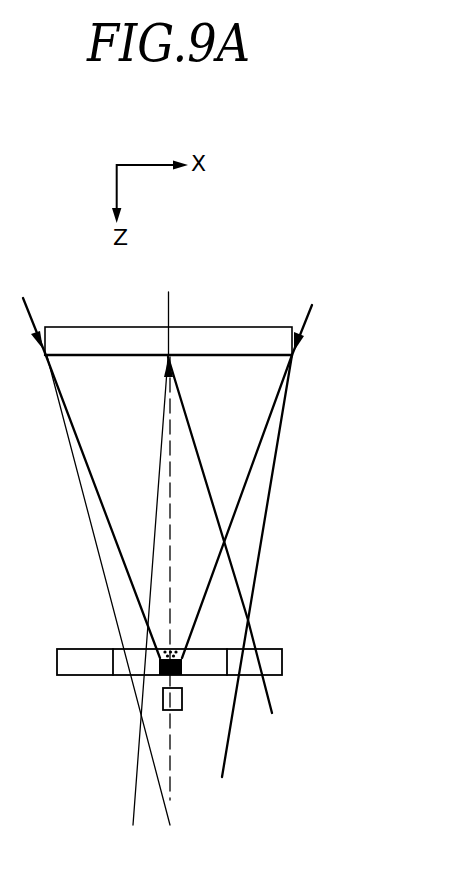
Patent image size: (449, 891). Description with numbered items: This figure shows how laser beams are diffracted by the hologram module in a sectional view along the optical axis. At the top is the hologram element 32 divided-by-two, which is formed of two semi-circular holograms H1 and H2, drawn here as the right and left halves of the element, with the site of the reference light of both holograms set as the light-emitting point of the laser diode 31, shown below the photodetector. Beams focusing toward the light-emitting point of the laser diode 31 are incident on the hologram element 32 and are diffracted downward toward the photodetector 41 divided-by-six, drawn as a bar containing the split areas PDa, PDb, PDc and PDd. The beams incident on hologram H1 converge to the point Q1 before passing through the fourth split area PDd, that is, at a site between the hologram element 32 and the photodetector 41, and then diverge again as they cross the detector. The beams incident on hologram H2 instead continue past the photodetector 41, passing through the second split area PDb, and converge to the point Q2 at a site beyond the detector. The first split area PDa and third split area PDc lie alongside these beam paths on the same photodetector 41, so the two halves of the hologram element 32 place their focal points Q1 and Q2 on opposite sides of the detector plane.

The hologram element divided-by-two 32 is at (272, 340).
The photodetector divided-by-six 41 is at (267, 645).
The laser diode 31 is at (182, 695).
The hologram H1 is at (238, 337).
The hologram H2 is at (112, 335).
The first split area PDa is at (80, 657).
The second split area PDb is at (122, 678).
The third split area PDc is at (202, 672).
The fourth split area PDd is at (268, 662).
The point Q1 is at (248, 620).
The point Q2 is at (119, 750).